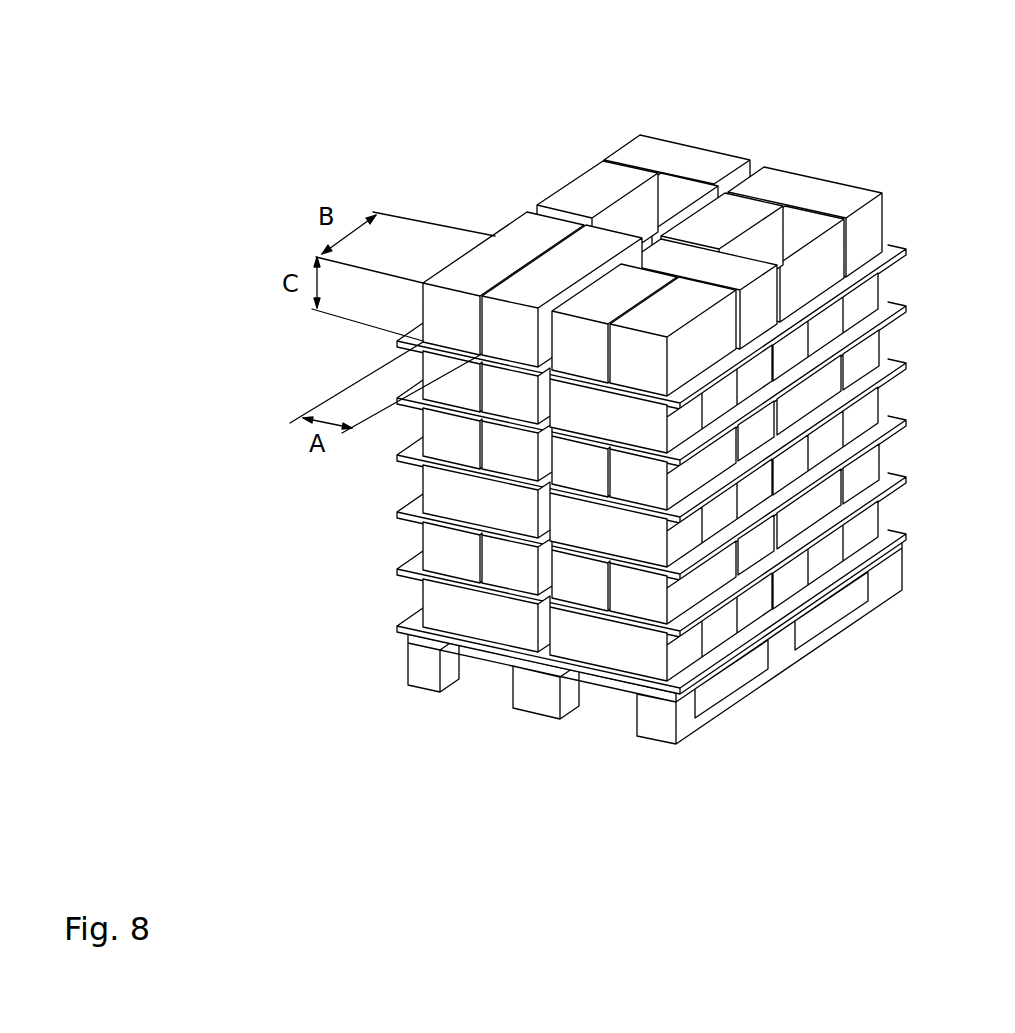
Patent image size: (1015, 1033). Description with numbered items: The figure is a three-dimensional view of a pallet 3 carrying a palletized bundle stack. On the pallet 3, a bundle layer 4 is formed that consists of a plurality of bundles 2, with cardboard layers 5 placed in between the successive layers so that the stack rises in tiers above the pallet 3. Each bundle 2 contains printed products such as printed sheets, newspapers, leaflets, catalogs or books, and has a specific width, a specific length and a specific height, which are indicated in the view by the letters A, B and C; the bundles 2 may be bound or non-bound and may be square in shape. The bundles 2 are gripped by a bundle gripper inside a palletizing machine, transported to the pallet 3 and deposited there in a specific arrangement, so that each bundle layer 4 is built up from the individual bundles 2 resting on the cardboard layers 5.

The bundle 2 is at (800, 232).
The pallet 3 is at (885, 571).
The bundle layer 4 is at (683, 148).
The cardboard layer 5 is at (885, 425).